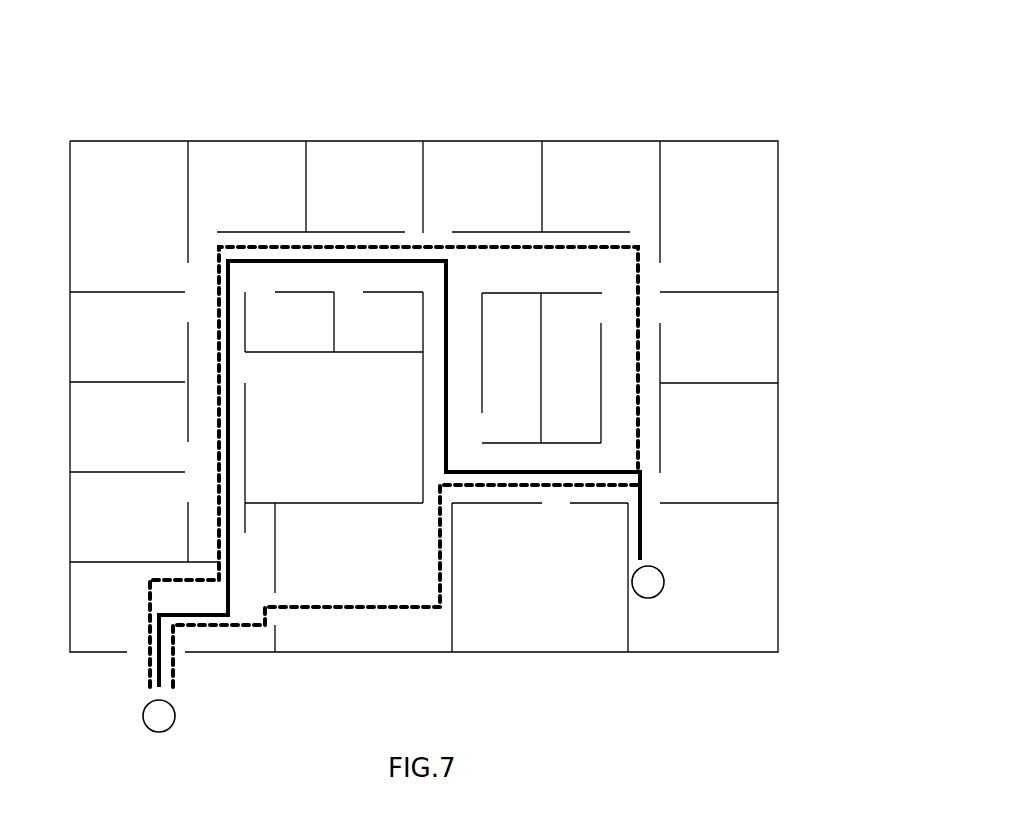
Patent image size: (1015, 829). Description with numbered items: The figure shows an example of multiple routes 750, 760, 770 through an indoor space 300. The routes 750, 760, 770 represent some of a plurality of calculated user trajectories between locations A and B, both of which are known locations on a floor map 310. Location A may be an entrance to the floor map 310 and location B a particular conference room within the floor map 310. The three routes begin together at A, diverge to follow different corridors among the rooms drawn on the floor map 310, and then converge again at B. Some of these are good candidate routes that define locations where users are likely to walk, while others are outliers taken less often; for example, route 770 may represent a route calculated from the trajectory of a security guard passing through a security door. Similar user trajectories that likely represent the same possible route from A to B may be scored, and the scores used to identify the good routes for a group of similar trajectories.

The indoor space 300 is at (991, 62).
The floor map 310 is at (648, 663).
The route 750 is at (344, 258).
The route 760 is at (252, 245).
The route 770 is at (337, 607).